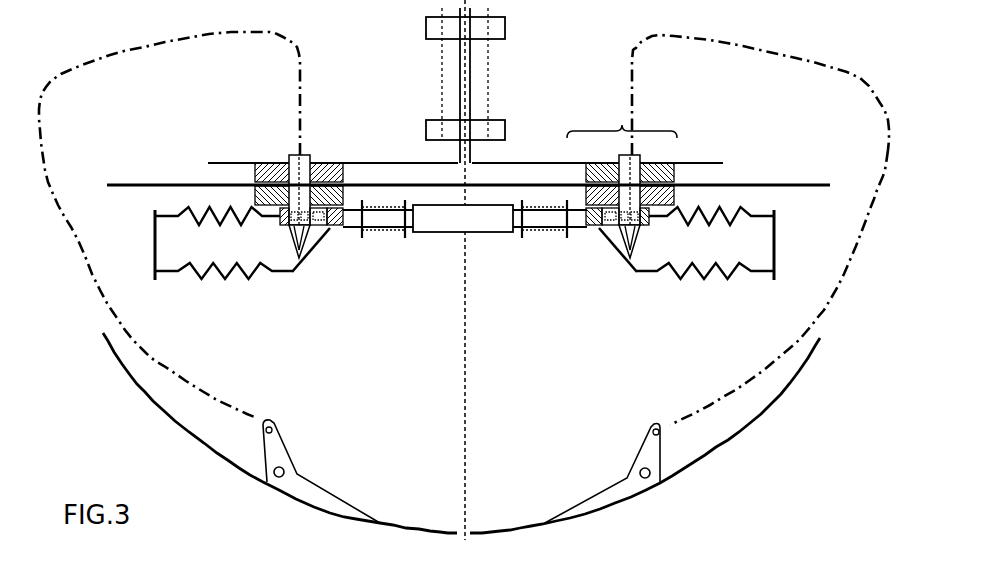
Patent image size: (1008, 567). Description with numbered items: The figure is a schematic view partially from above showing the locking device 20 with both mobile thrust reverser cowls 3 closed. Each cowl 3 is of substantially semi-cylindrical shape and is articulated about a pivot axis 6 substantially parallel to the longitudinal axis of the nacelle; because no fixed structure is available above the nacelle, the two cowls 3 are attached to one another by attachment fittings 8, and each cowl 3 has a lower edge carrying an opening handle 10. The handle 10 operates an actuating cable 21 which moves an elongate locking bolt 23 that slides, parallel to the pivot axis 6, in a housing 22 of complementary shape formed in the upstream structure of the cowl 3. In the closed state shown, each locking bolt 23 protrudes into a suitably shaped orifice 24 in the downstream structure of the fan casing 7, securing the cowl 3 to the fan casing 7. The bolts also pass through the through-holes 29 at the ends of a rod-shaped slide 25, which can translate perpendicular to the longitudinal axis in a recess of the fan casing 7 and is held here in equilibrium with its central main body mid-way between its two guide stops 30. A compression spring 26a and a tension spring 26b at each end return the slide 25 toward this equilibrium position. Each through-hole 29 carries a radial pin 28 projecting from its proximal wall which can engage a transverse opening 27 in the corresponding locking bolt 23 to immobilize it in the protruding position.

The mobile thrust reverser cowl 3 is at (387, 157).
The pivot axis 6 is at (360, 63).
The fan casing 7 is at (789, 183).
The attachment fitting 8 is at (497, 135).
The opening handle 10 is at (623, 492).
The locking device 20 is at (670, 190).
The actuating cable 21 is at (745, 45).
The housing 22 is at (292, 153).
The locking bolt 23 is at (293, 150).
The orifice 24 is at (675, 162).
The slide 25 is at (453, 220).
The compression spring 26a is at (237, 207).
The tension spring 26b is at (233, 280).
The transverse opening 27 is at (630, 262).
The radial pin 28 is at (603, 230).
The through-hole 29 is at (307, 230).
The guide stop 30 is at (528, 237).